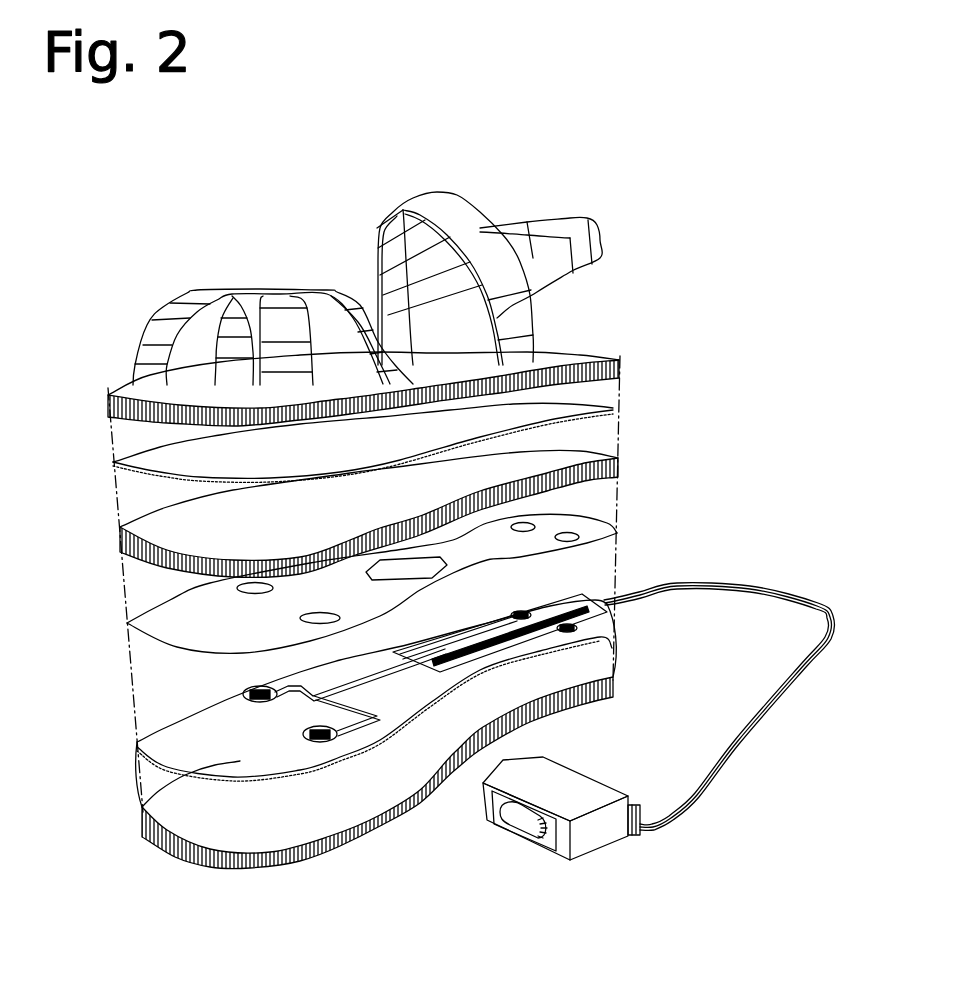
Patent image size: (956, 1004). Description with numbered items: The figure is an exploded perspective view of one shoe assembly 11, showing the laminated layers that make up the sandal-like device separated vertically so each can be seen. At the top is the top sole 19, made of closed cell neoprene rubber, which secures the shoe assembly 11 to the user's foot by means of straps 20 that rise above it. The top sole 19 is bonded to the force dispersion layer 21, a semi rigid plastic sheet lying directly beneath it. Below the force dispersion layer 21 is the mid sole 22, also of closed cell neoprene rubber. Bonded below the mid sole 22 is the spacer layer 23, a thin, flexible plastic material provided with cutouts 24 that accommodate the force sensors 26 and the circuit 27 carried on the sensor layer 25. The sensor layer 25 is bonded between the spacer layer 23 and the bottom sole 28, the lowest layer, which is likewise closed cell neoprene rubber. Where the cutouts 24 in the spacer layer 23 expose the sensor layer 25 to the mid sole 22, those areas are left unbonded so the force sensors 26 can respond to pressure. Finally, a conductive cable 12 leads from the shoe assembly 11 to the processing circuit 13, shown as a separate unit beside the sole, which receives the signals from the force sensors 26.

The shoe assembly 11 is at (237, 222).
The conductive cable 12 is at (790, 687).
The processing circuit 13 is at (603, 842).
The top sole 19 is at (627, 358).
The straps 20 is at (593, 220).
The force dispersion layer 21 is at (627, 410).
The mid sole 22 is at (627, 458).
The spacer layer 23 is at (117, 628).
The cutouts 24 is at (297, 625).
The sensor layer 25 is at (127, 747).
The force sensors 26 is at (300, 738).
The circuit 27 is at (403, 667).
The bottom sole 28 is at (613, 670).